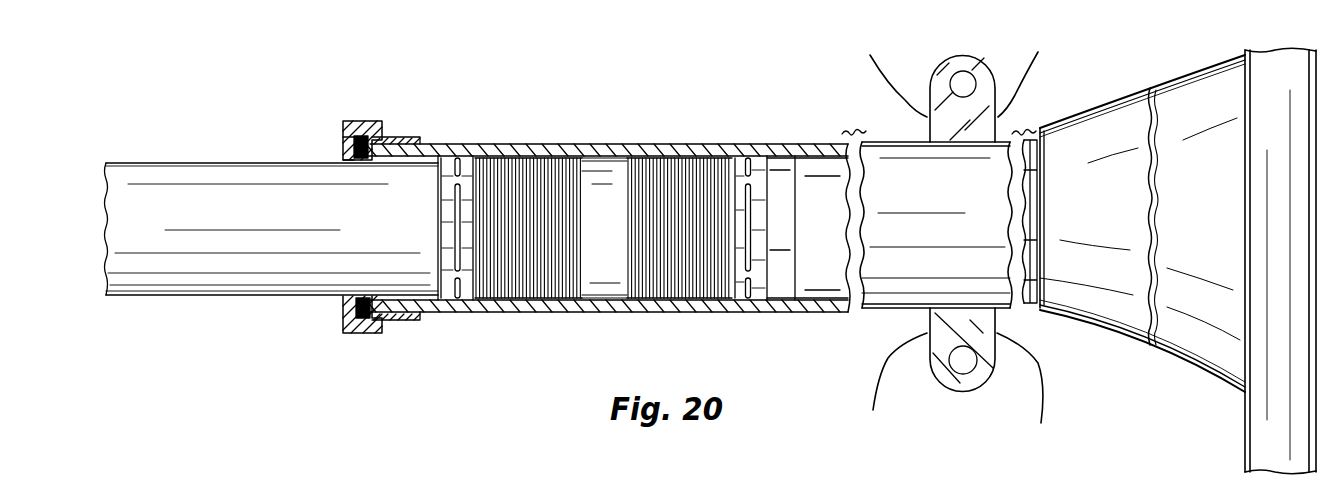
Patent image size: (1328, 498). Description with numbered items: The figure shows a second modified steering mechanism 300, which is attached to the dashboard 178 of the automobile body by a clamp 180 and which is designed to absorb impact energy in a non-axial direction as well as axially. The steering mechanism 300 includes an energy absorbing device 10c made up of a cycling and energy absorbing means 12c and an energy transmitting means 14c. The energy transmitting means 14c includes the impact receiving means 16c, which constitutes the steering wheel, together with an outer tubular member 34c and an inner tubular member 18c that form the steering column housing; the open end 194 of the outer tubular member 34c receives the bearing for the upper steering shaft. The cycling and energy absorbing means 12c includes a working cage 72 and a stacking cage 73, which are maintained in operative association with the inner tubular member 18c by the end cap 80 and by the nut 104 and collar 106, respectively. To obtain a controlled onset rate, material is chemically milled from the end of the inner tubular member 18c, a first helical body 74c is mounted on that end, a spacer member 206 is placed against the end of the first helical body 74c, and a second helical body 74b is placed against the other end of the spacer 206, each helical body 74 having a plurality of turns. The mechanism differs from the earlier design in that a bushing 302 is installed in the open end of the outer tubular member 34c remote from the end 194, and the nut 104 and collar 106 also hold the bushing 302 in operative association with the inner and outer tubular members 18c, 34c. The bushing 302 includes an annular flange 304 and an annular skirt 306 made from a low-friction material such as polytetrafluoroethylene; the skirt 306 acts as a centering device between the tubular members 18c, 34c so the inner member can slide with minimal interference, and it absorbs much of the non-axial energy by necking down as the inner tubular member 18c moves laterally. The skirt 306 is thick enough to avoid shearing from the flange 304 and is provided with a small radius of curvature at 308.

The energy absorbing device 10c is at (608, 227).
The cycling and energy absorbing means 12c is at (608, 227).
The energy transmitting means 14c is at (833, 312).
The impact receiving means 16c is at (1265, 62).
The inner tubular member 18c is at (302, 289).
The outer tubular member 34c is at (537, 147).
The working cage 72 is at (757, 184).
The stacking cage 73 is at (437, 218).
The helical body 74 is at (650, 172).
The second helical body 74b is at (500, 303).
The first helical body 74c is at (679, 223).
The end cap 80 is at (785, 243).
The nut 104 is at (383, 153).
The collar 106 is at (416, 141).
The dashboard 178 is at (1035, 391).
The clamp 180 is at (1021, 96).
The open end 194 is at (1030, 136).
The spacer member 206 is at (603, 292).
The steering mechanism 300 is at (548, 367).
The bushing 302 is at (346, 147).
The annular flange 304 is at (348, 318).
The annular skirt 306 is at (388, 317).
The small radius of curvature 308 is at (358, 165).